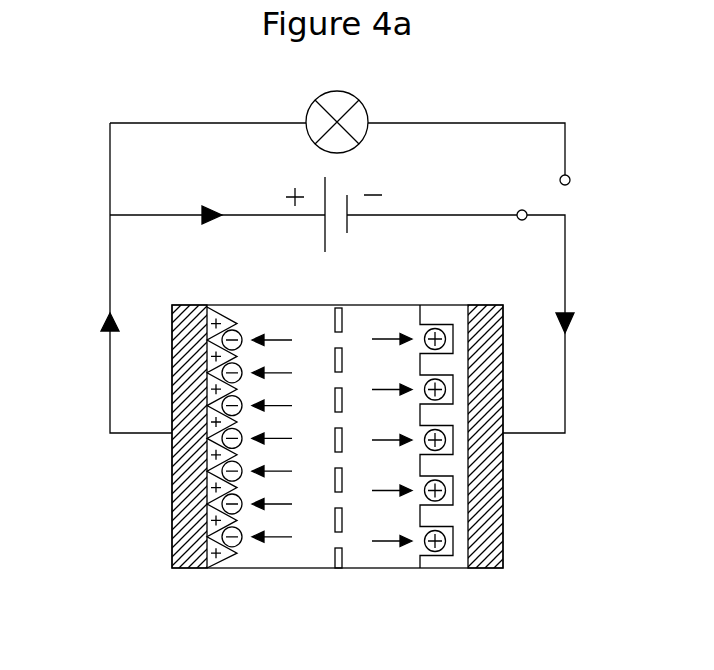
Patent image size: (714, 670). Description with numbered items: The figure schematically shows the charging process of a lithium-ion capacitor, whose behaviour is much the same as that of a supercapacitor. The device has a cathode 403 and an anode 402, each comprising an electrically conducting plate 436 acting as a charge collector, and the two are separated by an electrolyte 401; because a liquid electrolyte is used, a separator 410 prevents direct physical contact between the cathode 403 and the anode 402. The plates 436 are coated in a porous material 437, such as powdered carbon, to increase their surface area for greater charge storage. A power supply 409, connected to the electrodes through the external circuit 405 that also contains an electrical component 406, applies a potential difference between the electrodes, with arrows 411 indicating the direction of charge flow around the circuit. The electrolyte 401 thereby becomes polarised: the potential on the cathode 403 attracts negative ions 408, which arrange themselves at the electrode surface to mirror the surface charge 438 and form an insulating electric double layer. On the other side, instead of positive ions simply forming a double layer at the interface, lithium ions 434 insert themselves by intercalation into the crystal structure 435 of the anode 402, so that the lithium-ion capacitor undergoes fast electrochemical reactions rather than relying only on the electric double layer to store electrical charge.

The electrolyte 401 is at (313, 555).
The anode 402 is at (507, 446).
The cathode 403 is at (162, 450).
The external circuit 405 is at (480, 122).
The electrical component 406 is at (317, 118).
The negative ions 408 is at (232, 548).
The voltage source 409 is at (367, 238).
The separator 410 is at (340, 568).
The current flow direction 411 is at (213, 207).
The lithium ions 434 is at (437, 547).
The crystal structure 435 is at (447, 315).
The electrically conducting plate 436 is at (182, 522).
The porous material 437 is at (218, 308).
The surface charge 438 is at (210, 567).